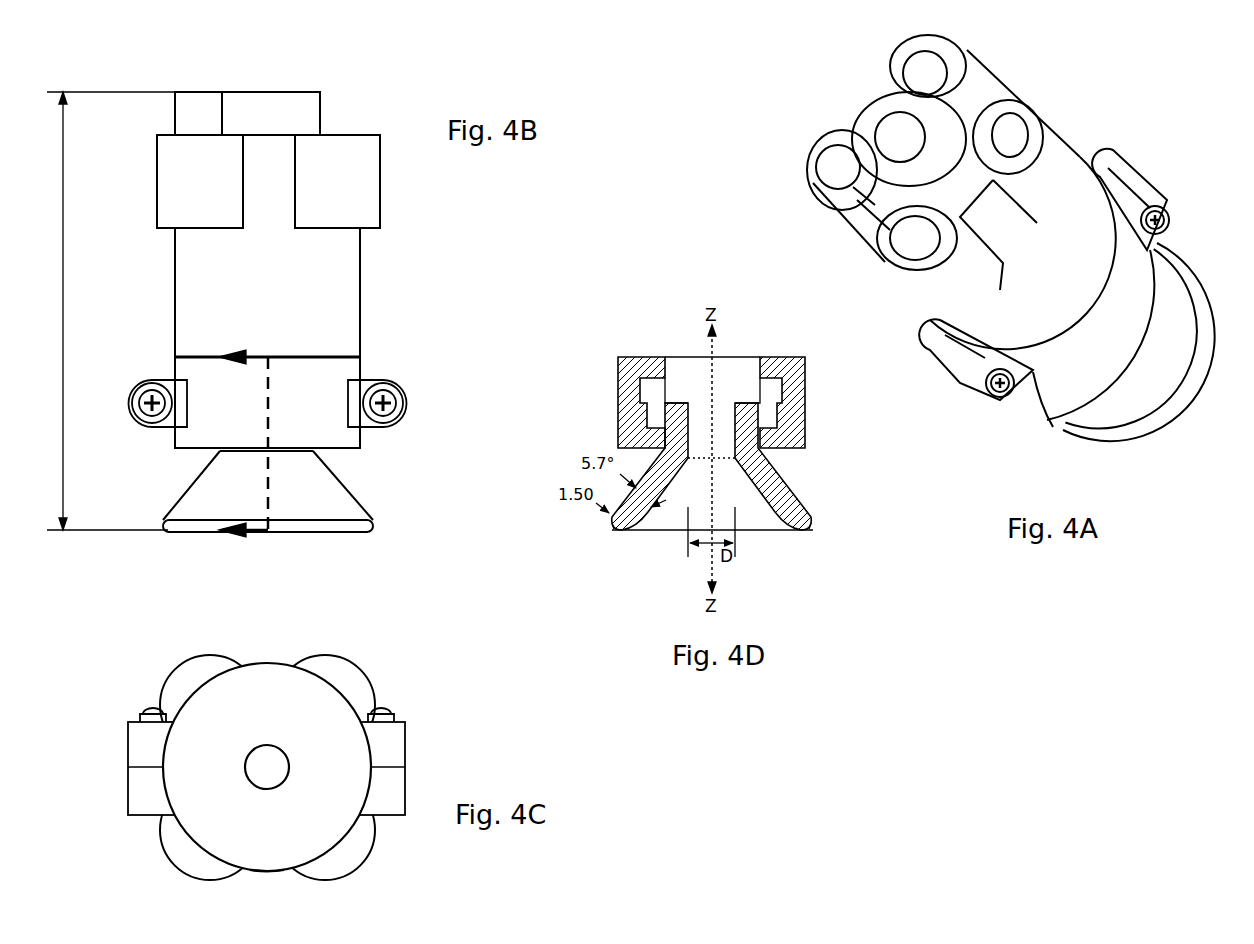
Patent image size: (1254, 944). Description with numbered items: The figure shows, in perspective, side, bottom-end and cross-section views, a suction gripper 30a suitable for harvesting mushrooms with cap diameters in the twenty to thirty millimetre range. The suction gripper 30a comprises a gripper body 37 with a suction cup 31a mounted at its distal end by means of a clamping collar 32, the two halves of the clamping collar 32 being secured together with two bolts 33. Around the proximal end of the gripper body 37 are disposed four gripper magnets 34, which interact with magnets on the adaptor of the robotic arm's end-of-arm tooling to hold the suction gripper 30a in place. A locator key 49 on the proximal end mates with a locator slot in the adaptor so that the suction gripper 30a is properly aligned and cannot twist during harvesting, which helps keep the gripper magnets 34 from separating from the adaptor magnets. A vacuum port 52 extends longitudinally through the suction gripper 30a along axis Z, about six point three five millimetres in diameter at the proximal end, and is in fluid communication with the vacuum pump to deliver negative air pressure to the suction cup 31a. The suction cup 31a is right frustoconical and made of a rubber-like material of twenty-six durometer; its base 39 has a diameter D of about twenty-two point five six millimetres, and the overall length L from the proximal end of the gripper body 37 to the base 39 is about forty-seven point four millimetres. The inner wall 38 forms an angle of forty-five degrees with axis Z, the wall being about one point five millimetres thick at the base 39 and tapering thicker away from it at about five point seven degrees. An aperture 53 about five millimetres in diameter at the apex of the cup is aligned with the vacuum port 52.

In FIG. 4B, the suction gripper 30a is at (412, 254).
In FIG. 4A, the suction gripper 30a is at (1155, 141).
In FIG. 4B, the suction cup 31a is at (330, 494).
In FIG. 4C, the suction cup 31a is at (258, 683).
In FIG. 4D, the suction cup 31a is at (770, 478).
In FIG. 4A, the suction cup 31a is at (1123, 403).
In FIG. 4B, the clamping collar 32 is at (330, 376).
In FIG. 4C, the clamping collar 32 is at (397, 762).
In FIG. 4D, the clamping collar 32 is at (795, 395).
In FIG. 4A, the clamping collar 32 is at (1063, 363).
In FIG. 4B, the bolts 33 is at (140, 393).
In FIG. 4C, the bolts 33 is at (150, 710).
In FIG. 4A, the bolts 33 is at (1172, 227).
In FIG. 4B, the gripper magnets 34 is at (165, 171).
In FIG. 4C, the gripper magnets 34 is at (197, 668).
In FIG. 4A, the gripper magnets 34 is at (923, 73).
In FIG. 4B, the gripper body 37 is at (338, 310).
In FIG. 4A, the gripper body 37 is at (1085, 223).
In FIG. 4D, the inner wall 38 is at (640, 522).
In FIG. 4B, the base 39 is at (340, 531).
In FIG. 4C, the base 39 is at (267, 873).
In FIG. 4D, the base 39 is at (797, 535).
In FIG. 4A, the base 39 is at (1112, 432).
In FIG. 4B, the locator key 49 is at (178, 112).
In FIG. 4A, the locator key 49 is at (853, 187).
In FIG. 4D, the vacuum port 52 is at (697, 366).
In FIG. 4A, the vacuum port 52 is at (898, 132).
In FIG. 4C, the aperture 53 is at (267, 763).
In FIG. 4D, the aperture 53 is at (701, 444).